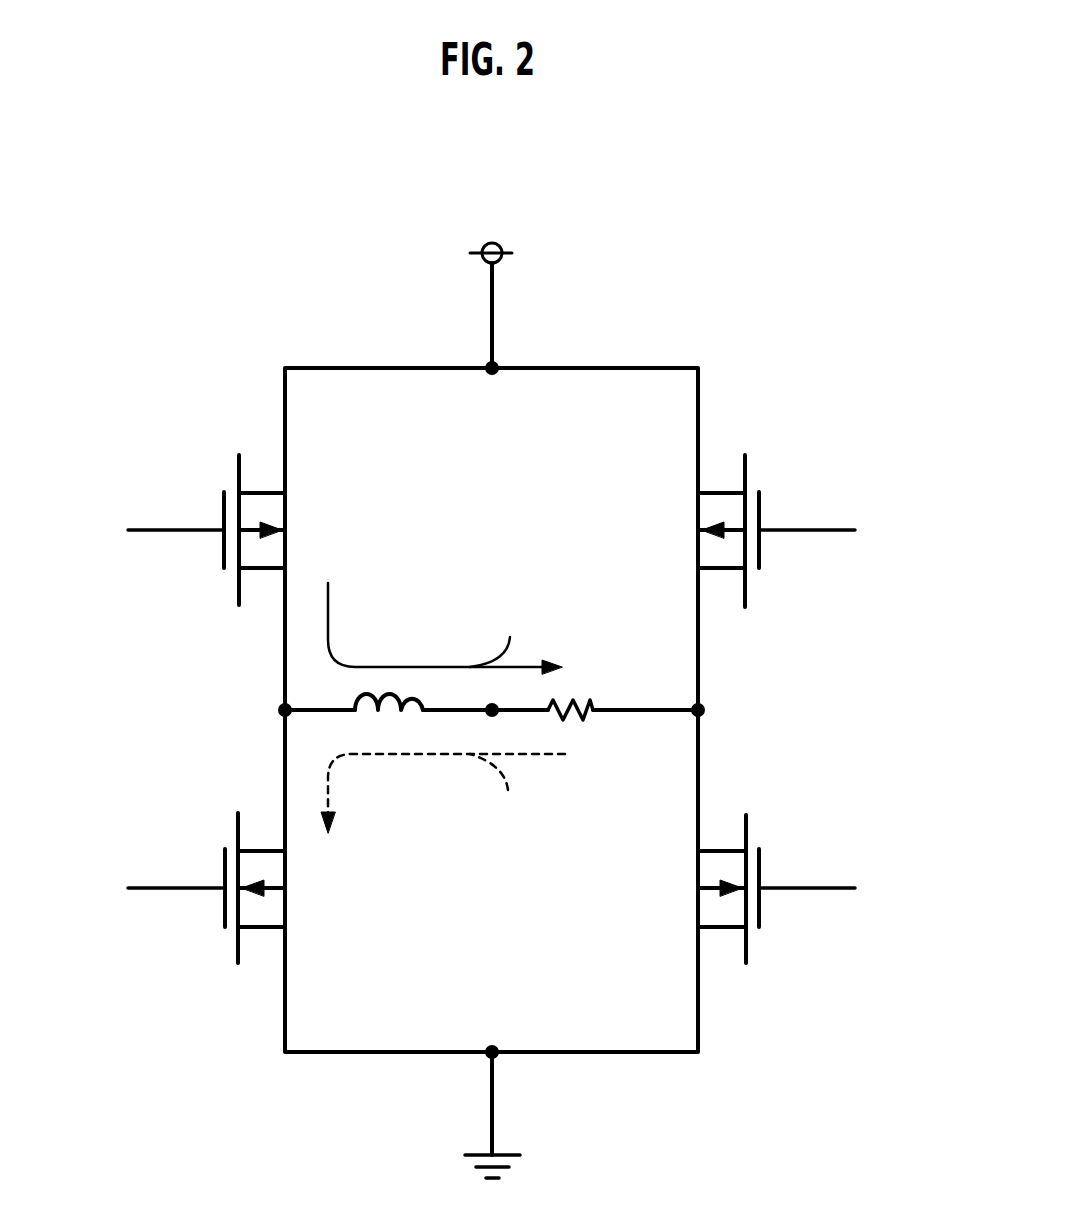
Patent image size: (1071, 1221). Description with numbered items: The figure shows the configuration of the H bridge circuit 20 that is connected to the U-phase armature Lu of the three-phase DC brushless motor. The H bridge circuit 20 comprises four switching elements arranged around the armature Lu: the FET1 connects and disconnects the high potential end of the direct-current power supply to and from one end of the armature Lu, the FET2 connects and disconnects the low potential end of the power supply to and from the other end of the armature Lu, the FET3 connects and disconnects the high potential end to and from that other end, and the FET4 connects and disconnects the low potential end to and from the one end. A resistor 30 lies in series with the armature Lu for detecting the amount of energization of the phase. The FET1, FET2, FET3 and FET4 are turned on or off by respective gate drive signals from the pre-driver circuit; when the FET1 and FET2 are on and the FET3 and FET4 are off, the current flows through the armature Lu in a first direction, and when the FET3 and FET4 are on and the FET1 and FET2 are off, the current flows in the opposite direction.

The H bridge circuit 20 is at (491, 690).
The resistor 30 is at (577, 700).
The U-phase armature Lu is at (368, 720).
The element FET1 is at (238, 590).
The element FET2 is at (747, 830).
The element FET3 is at (745, 590).
The element FET4 is at (237, 833).